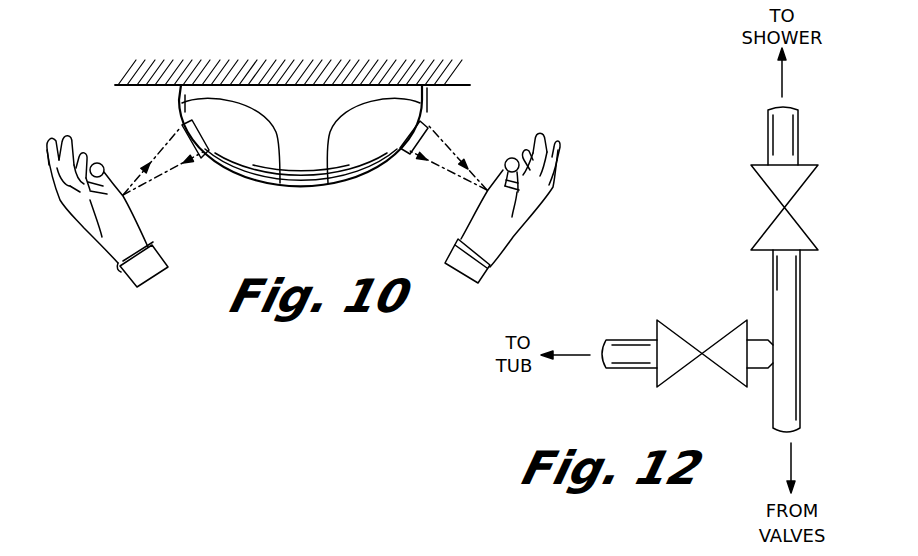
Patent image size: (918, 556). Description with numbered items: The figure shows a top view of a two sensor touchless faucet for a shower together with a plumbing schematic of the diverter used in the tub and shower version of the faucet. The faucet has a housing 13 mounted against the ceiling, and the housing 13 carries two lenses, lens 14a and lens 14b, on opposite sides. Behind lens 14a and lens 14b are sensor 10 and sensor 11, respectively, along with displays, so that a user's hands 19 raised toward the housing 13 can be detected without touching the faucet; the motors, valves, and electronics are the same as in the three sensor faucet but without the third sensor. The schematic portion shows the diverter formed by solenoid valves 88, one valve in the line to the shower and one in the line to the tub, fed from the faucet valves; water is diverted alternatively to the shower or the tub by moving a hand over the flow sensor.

In FIG. 10, the sensor 10 is at (405, 140).
In FIG. 10, the sensor 11 is at (200, 140).
In FIG. 10, the housing 13 is at (303, 187).
In FIG. 10, the lens 14a is at (425, 112).
In FIG. 10, the lens 14b is at (182, 114).
In FIG. 10, the user's hands 19 is at (73, 214).
In FIG. 12, the solenoid valves 88 is at (807, 184).